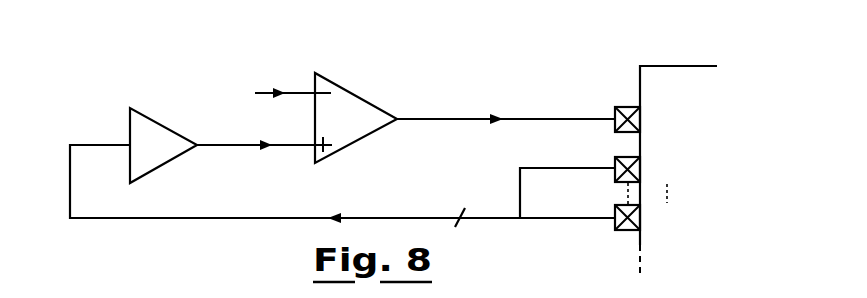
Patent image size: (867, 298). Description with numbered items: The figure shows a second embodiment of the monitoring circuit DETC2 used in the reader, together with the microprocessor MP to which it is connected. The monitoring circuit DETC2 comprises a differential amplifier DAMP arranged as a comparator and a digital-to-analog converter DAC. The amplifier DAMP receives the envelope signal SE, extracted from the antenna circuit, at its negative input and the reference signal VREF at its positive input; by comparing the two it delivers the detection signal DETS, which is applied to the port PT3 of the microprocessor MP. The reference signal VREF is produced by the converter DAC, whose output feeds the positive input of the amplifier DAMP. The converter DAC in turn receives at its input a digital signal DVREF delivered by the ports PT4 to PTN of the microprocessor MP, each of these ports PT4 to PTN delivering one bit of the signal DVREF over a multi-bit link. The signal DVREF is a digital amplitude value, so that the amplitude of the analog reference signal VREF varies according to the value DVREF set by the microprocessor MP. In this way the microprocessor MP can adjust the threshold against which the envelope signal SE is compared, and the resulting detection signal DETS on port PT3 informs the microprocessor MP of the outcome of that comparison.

The monitoring circuit DETC2 is at (172, 66).
The digital-to-analog converter DAC is at (172, 157).
The reference signal VREF is at (264, 133).
The envelope signal SE is at (276, 89).
The differential amplifier DAMP is at (352, 92).
The detection signal DETS is at (506, 107).
The digital signal DVREF is at (416, 207).
The microprocessor MP is at (680, 66).
The port PT3 is at (652, 119).
The port PT4 is at (652, 169).
The port PTN is at (652, 219).